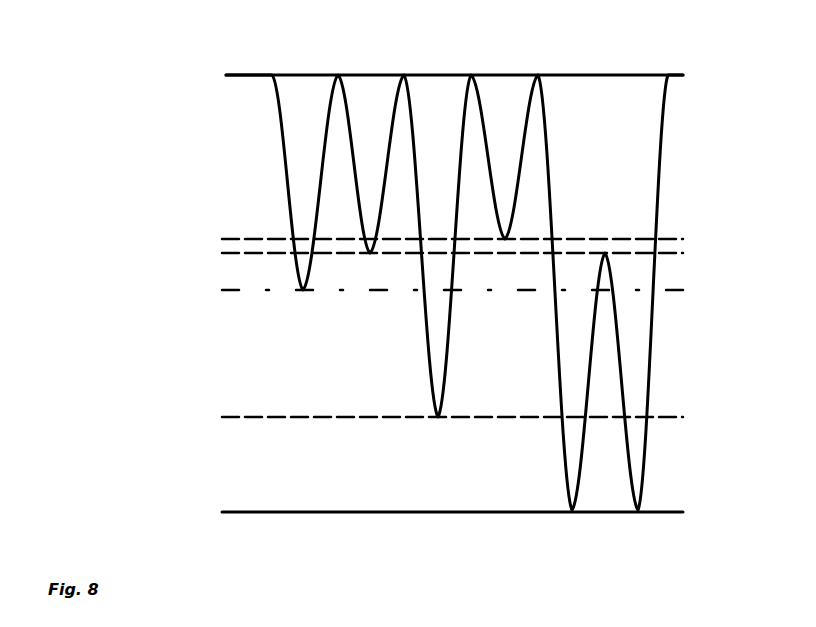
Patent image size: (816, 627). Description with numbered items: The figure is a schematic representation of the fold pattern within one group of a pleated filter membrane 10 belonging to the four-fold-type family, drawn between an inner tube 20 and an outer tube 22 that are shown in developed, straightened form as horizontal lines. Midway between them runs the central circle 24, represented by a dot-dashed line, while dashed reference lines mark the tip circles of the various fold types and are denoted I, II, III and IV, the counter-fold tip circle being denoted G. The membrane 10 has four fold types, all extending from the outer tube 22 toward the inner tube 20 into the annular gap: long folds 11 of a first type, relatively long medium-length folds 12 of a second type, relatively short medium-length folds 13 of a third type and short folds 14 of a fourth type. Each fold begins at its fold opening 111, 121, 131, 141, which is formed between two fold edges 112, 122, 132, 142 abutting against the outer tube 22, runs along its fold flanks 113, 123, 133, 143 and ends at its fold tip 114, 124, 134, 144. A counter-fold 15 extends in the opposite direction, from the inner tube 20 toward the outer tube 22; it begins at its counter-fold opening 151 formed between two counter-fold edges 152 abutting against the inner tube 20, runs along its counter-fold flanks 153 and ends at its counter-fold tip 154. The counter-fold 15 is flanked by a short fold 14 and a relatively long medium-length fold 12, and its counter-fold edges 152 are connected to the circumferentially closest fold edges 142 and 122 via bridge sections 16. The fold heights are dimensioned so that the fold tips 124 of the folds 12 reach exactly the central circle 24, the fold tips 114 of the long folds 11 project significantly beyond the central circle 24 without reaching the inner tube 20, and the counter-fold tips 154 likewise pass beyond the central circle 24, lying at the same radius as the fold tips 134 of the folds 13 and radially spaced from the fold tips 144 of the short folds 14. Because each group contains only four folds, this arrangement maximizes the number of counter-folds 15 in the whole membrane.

The filter membrane 10 is at (297, 267).
The long fold of a first fold type 11 is at (443, 196).
The relatively long medium-length fold of a second fold type 12 is at (304, 230).
The relatively short medium-length fold of a third fold type 13 is at (371, 217).
The short fold of a fourth fold type 14 is at (503, 99).
The counter-fold 15 is at (605, 312).
The bridge section 16 is at (557, 332).
The inner tube 20 is at (237, 512).
The outer tube 22 is at (240, 76).
The central circle 24 is at (668, 290).
The fold opening 111 is at (443, 89).
The fold edge 112 is at (404, 74).
The fold flank 113 is at (458, 171).
The fold tip 114 is at (438, 419).
The fold opening 121 is at (299, 90).
The fold edge 122 is at (238, 74).
The fold flank 123 is at (323, 162).
The fold tip 124 is at (303, 292).
The fold opening 131 is at (367, 86).
The fold edge 132 is at (338, 74).
The fold flank 133 is at (388, 163).
The fold tip 134 is at (370, 255).
The fold opening 141 is at (507, 83).
The fold edge 142 is at (538, 74).
The fold flank 143 is at (522, 168).
The fold tip 144 is at (506, 241).
The counter-fold opening 151 is at (603, 498).
The counter-fold edge 152 is at (572, 512).
The counter-fold flank 153 is at (628, 432).
The counter-fold tip 154 is at (583, 432).
The reference line for the first fold type I is at (678, 417).
The reference line for the second fold type II is at (512, 270).
The reference line for the third fold type III is at (511, 226).
The reference line for the fourth fold type IV is at (670, 238).
The reference line for the counter-fold G is at (678, 253).